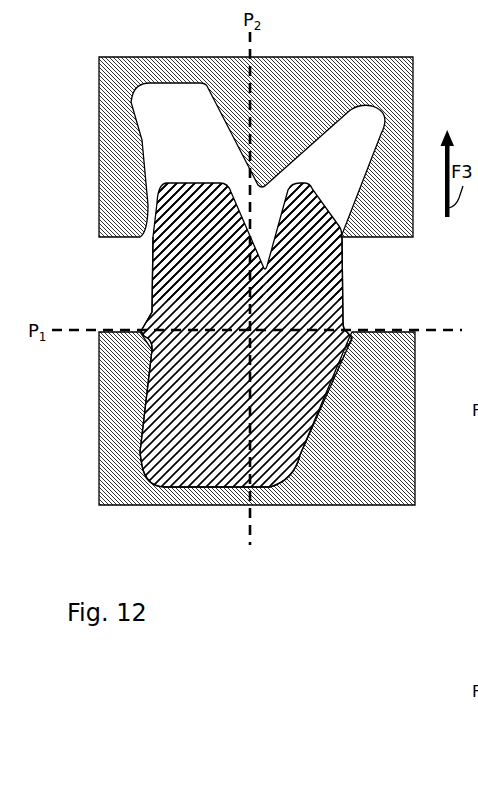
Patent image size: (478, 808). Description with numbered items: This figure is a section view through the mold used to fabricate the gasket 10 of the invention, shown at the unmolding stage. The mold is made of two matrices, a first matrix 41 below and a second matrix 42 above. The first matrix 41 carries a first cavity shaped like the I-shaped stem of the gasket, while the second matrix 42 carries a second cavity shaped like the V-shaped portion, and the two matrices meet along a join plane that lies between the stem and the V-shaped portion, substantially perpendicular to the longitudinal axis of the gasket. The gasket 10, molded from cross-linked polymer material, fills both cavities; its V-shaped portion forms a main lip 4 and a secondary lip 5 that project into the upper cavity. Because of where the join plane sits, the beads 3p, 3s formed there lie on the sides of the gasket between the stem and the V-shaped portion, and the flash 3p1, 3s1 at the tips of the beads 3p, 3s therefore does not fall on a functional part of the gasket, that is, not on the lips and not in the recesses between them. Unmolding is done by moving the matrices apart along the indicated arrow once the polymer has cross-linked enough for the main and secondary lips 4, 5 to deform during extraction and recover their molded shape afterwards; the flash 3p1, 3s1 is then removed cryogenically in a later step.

The second matrix 42 is at (380, 64).
The first matrix 41 is at (388, 463).
The gasket 10 is at (186, 452).
The secondary lip 5 is at (163, 273).
The main lip 4 is at (318, 258).
The bead of the join plane 3s is at (150, 327).
The bead of the join plane 3p is at (345, 330).
The flash 3s1 is at (140, 342).
The flash 3p1 is at (351, 344).